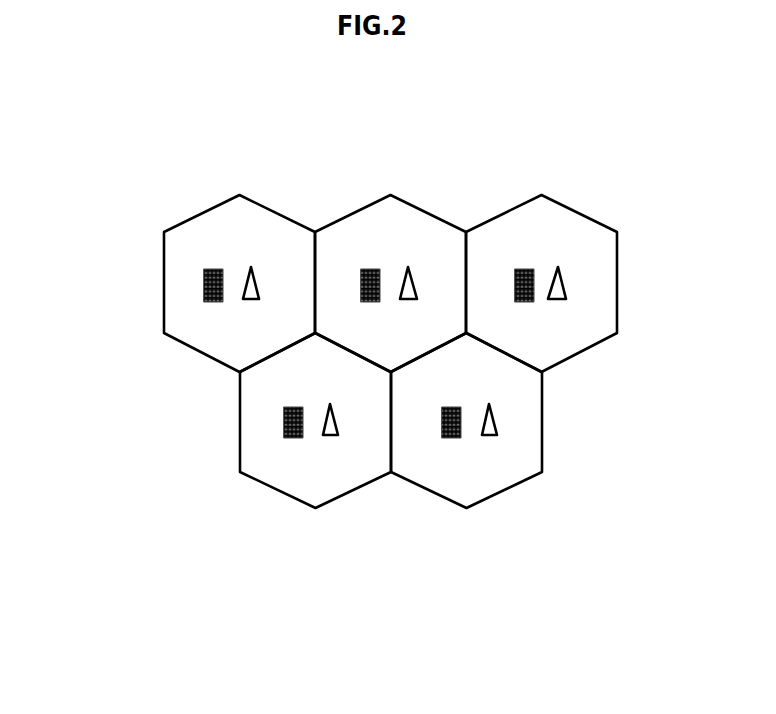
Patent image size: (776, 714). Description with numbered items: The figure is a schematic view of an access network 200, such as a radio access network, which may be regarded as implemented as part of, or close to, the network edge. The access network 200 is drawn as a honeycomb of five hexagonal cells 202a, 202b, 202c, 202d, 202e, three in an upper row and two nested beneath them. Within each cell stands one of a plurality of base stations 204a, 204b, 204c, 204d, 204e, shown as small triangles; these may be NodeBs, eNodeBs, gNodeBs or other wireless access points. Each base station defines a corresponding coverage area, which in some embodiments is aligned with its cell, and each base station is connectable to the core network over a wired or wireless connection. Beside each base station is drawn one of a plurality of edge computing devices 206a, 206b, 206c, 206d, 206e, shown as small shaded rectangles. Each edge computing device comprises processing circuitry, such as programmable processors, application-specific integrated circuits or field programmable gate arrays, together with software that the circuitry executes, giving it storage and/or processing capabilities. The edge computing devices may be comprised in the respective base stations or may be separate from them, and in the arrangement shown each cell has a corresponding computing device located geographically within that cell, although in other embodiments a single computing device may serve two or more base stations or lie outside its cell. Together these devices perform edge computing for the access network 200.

The access network 200 is at (398, 702).
The cell 202a is at (164, 298).
The cell 202b is at (394, 204).
The cell 202c is at (590, 342).
The cell 202d is at (315, 508).
The cell 202e is at (513, 482).
The base station 204a is at (252, 278).
The base station 204b is at (410, 283).
The base station 204c is at (560, 283).
The base station 204d is at (329, 430).
The base station 204e is at (498, 433).
The edge computing device 206a is at (208, 269).
The edge computing device 206b is at (363, 268).
The edge computing device 206c is at (523, 268).
The edge computing device 206d is at (283, 424).
The edge computing device 206e is at (448, 440).